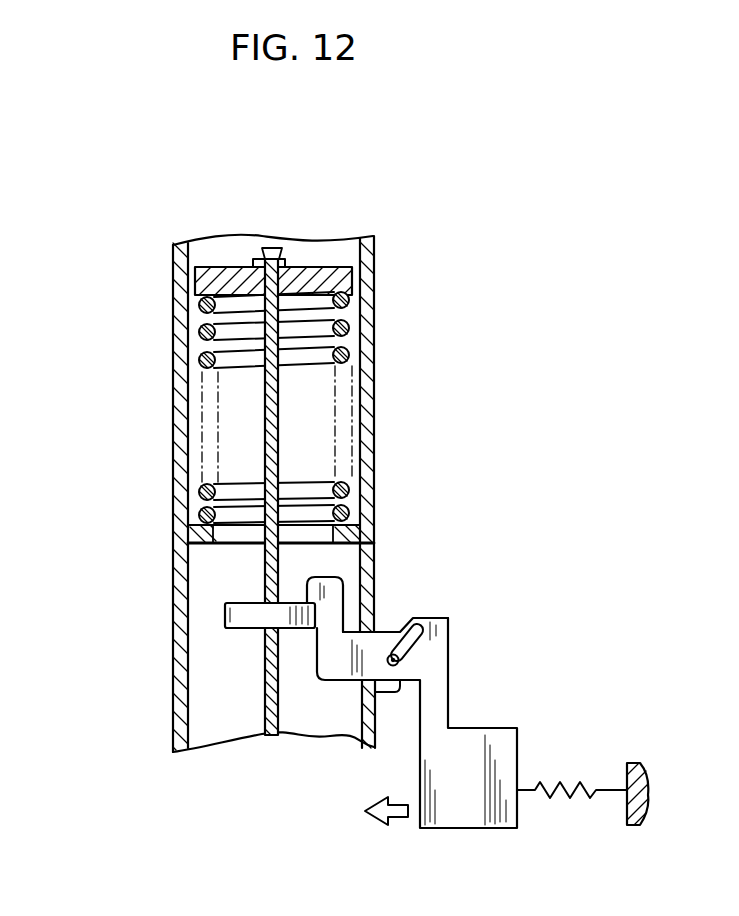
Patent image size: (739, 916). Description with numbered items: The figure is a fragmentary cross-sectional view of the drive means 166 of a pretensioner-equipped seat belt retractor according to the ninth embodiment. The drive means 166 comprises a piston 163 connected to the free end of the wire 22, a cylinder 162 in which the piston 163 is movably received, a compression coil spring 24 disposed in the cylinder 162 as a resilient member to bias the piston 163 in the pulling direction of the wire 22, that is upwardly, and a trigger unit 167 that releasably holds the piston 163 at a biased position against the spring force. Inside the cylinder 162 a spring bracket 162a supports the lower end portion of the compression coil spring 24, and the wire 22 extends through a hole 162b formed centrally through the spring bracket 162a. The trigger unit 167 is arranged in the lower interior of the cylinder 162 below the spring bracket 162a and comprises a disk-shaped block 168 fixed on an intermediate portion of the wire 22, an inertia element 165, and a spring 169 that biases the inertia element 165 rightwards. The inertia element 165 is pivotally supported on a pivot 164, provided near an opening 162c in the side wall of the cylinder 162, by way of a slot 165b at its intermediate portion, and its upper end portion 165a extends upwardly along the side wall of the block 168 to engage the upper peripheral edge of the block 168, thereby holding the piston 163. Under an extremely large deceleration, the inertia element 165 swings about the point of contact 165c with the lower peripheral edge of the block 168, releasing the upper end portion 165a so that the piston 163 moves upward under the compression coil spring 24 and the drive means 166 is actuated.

The wire 22 is at (268, 708).
The compression coil spring 24 is at (307, 487).
The cylinder 162 is at (183, 500).
The spring bracket 162a is at (186, 555).
The hole 162b is at (317, 535).
The opening 162c is at (363, 596).
The piston 163 is at (312, 268).
The pivot 164 is at (400, 663).
The inertia element 165 is at (520, 760).
The upper end portion 165a is at (307, 597).
The slot 165b is at (418, 644).
The point of contact 165c is at (318, 628).
The drive means 166 is at (411, 287).
The trigger unit 167 is at (493, 619).
The block 168 is at (243, 628).
The spring 169 is at (568, 800).